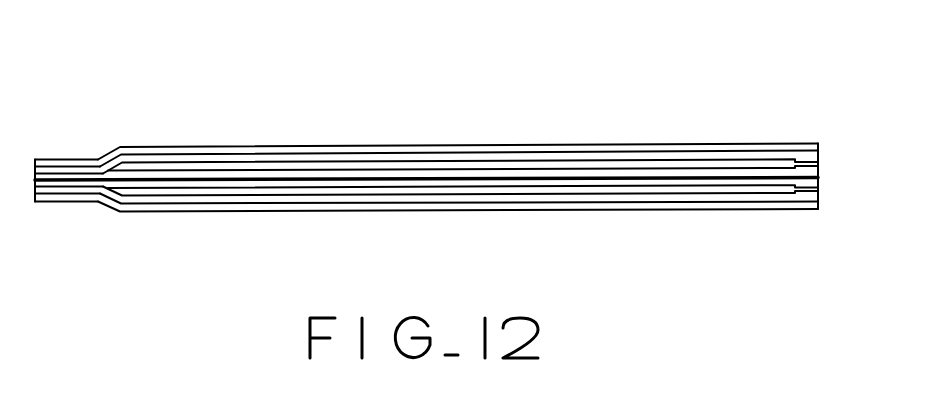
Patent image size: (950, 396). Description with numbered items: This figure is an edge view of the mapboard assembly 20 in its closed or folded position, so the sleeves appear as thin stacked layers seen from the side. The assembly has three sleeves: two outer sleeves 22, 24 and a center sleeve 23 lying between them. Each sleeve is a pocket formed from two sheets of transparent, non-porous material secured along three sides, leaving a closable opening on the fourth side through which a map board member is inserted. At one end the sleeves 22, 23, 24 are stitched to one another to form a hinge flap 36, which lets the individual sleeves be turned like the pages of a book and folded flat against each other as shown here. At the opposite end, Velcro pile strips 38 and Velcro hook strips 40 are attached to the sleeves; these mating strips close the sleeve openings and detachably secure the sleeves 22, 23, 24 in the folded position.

The mapboard assembly 20 is at (291, 93).
The outer sleeve 22 is at (557, 152).
The center sleeve 23 is at (407, 179).
The outer sleeve 24 is at (549, 204).
The hinge flap 36 is at (58, 154).
The Velcro pile strips 38 is at (820, 164).
The Velcro hook strips 40 is at (819, 158).